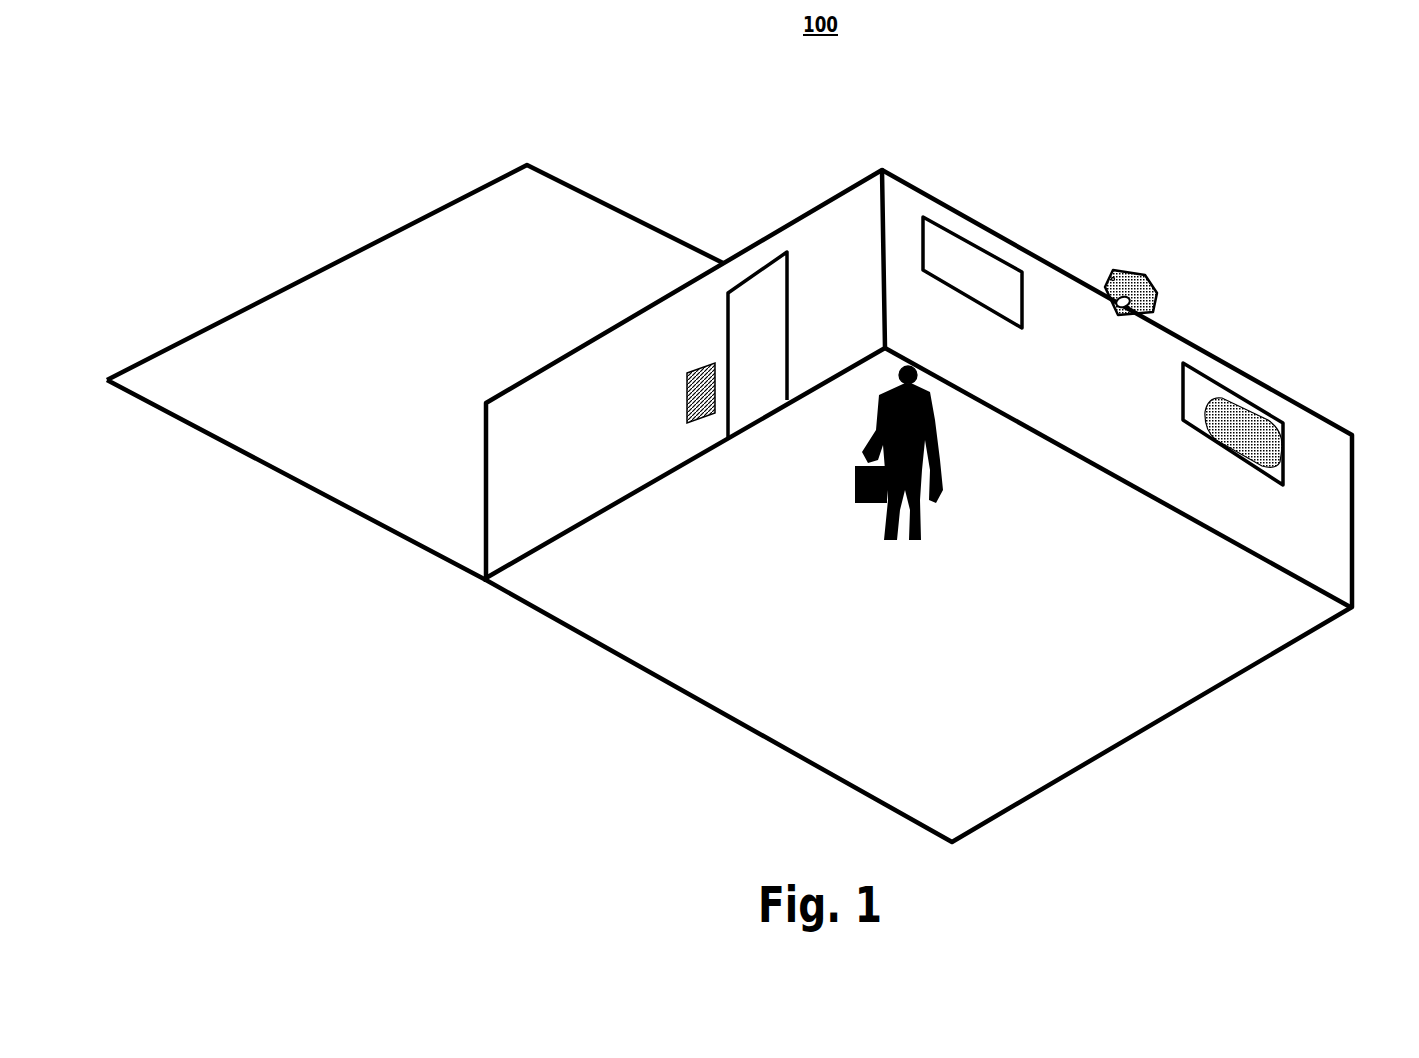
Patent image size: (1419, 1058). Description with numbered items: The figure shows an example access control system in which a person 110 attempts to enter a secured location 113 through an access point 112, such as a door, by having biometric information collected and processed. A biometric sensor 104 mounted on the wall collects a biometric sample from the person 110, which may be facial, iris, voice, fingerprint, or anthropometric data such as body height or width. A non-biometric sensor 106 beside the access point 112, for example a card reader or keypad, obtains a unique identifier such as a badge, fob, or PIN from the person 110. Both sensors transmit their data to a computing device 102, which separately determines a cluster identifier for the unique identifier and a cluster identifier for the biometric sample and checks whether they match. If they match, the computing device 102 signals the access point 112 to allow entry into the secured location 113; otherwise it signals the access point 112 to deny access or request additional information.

The computing device 102 is at (1267, 417).
The biometric sensor 104 is at (1178, 237).
The non-biometric sensor 106 is at (687, 373).
The person 110 is at (917, 365).
The access point 112 is at (723, 293).
The secured location 113 is at (303, 268).